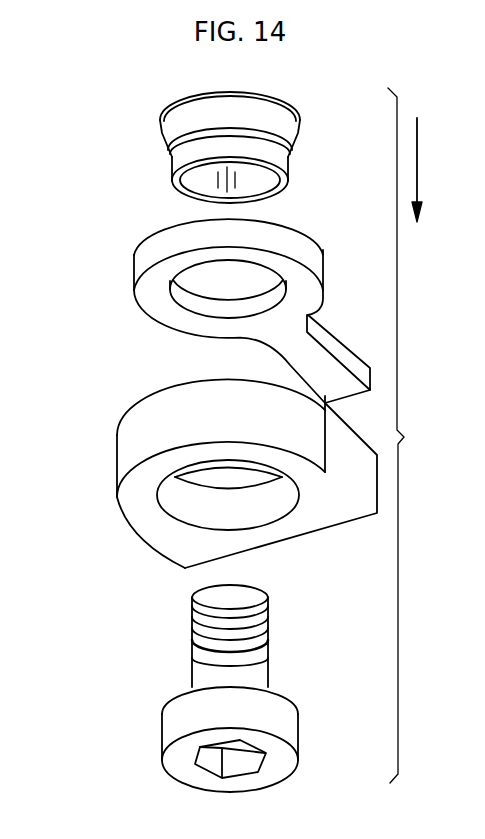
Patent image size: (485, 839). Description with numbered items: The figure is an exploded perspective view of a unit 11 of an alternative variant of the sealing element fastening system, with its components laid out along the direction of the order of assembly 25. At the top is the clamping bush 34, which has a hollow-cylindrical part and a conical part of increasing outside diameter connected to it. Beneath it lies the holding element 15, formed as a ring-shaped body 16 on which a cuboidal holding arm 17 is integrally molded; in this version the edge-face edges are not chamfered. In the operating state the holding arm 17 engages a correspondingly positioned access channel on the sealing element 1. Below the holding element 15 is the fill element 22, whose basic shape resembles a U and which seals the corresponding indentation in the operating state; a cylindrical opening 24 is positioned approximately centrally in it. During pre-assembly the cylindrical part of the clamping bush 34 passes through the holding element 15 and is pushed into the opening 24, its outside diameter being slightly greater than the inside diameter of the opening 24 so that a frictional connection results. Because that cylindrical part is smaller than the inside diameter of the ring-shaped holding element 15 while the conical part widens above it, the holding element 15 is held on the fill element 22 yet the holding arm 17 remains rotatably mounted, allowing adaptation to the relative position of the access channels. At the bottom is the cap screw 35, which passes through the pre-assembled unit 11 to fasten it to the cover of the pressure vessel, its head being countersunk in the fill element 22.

The sealing element 1 is at (475, 296).
The unit 11 is at (413, 435).
The holding element 15 is at (205, 298).
The ring-shaped body 16 is at (299, 244).
The holding arm 17 is at (336, 349).
The fill element 22 is at (199, 482).
The opening 24 is at (234, 510).
The order of assembly 25 is at (419, 158).
The clamping bush 34 is at (147, 157).
The cap screw 35 is at (152, 668).